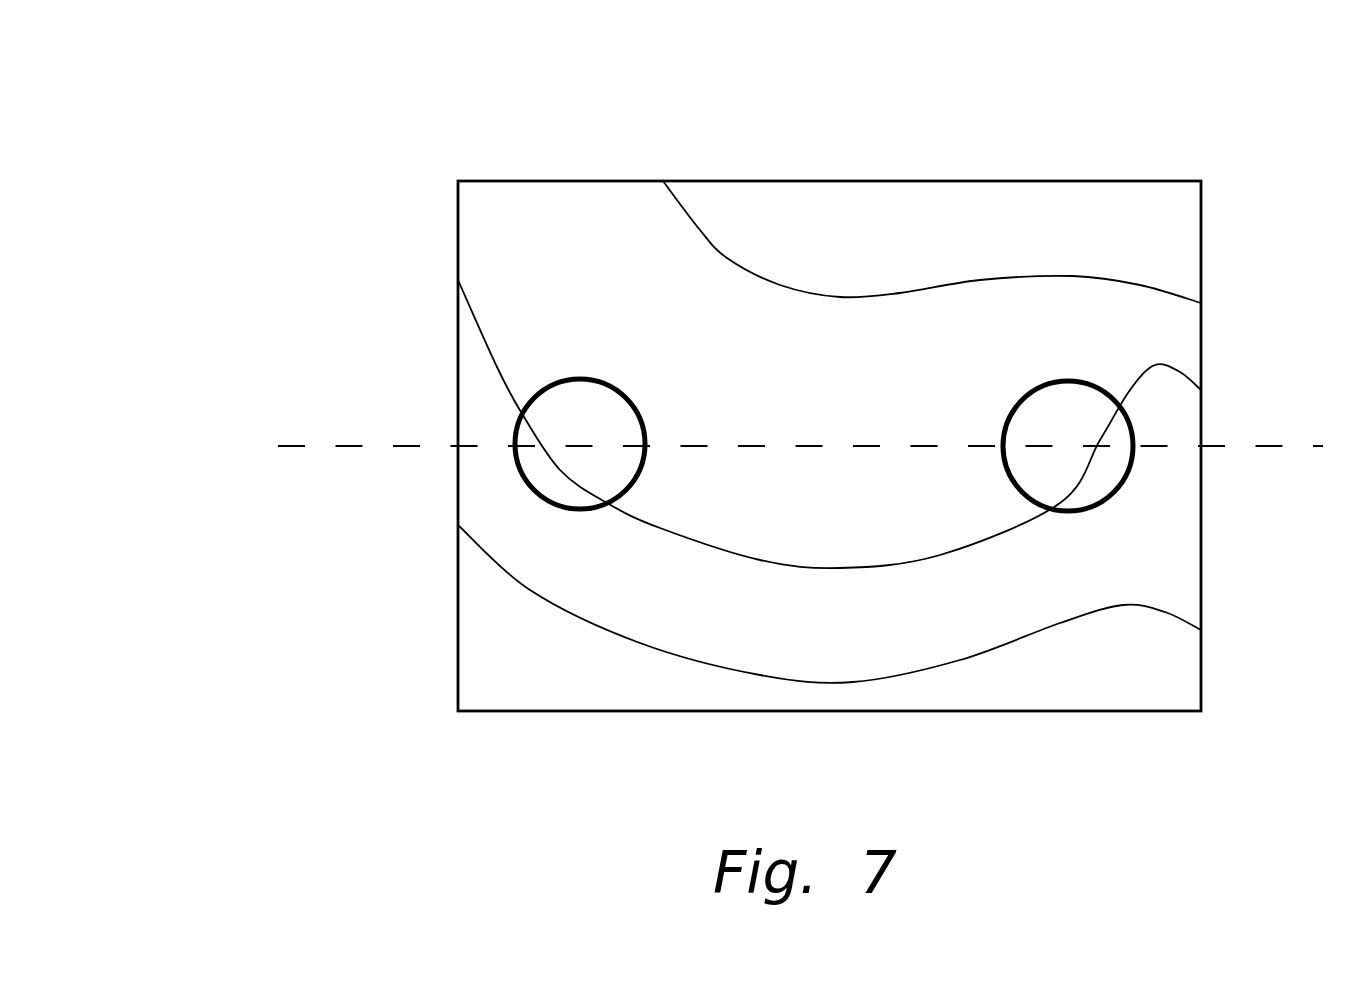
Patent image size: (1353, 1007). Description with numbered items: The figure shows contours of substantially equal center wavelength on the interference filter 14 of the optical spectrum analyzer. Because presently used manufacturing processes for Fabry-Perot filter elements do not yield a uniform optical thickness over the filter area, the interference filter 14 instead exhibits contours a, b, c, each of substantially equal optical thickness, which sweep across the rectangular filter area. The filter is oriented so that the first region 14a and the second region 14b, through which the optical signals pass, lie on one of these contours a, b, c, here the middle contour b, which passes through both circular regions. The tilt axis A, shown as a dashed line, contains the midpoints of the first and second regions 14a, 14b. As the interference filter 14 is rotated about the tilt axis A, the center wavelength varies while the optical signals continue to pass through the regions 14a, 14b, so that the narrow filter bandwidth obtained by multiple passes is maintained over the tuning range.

The interference filter 14 is at (1020, 181).
The first region 14a is at (580, 390).
The second region 14b is at (1027, 431).
The contour a is at (727, 258).
The contour b is at (770, 560).
The contour c is at (807, 680).
The tilt axis A is at (788, 447).